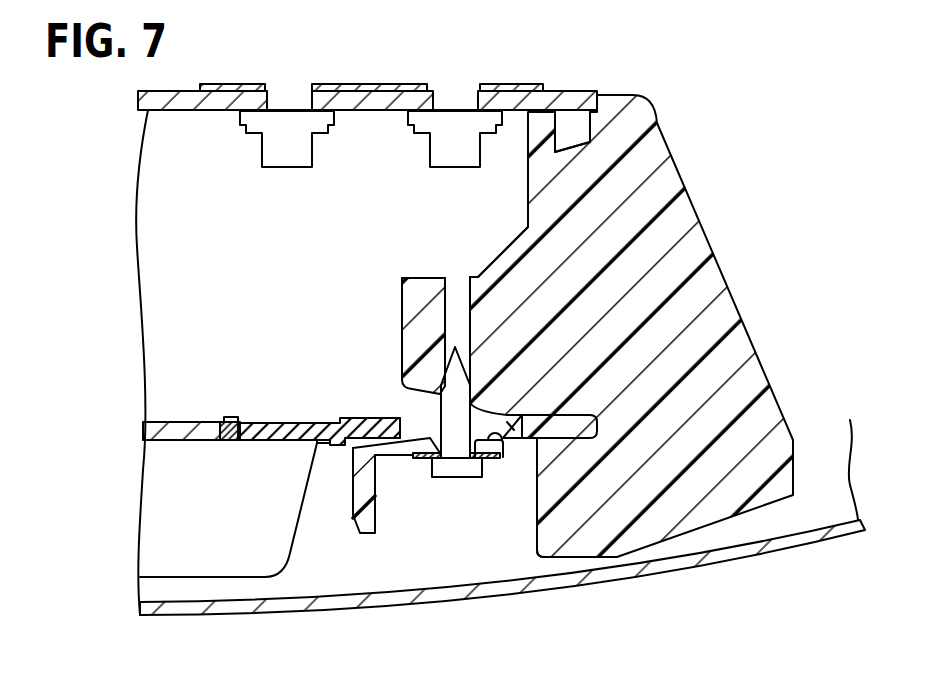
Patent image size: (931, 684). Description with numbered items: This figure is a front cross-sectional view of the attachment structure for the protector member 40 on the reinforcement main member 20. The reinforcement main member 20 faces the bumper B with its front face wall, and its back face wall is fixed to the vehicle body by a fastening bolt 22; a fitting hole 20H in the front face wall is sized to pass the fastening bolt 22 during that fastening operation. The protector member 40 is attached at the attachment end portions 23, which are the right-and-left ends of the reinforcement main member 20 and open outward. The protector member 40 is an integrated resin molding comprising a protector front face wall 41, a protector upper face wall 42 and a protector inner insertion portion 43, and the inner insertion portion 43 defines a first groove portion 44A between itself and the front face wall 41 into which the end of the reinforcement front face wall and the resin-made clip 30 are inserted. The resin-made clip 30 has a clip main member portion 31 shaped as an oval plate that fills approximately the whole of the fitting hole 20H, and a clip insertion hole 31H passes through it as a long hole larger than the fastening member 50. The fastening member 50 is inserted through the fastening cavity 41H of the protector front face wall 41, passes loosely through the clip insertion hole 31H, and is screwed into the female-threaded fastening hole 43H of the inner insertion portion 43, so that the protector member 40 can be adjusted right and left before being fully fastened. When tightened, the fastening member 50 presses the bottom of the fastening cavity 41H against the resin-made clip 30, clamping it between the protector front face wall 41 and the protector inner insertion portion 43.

The reinforcement main member 20 is at (181, 443).
The fitting hole 20H is at (228, 420).
The fastening bolt 22 is at (272, 167).
The attachment end portion 23 is at (572, 106).
The resin-made clip 30 is at (313, 420).
The clip main member portion 31 is at (270, 420).
The clip insertion hole 31H is at (402, 418).
The protector member 40 is at (650, 317).
The protector front face wall 41 is at (485, 513).
The fastening cavity 41H is at (380, 515).
The protector upper face wall 42 is at (712, 270).
The protector inner insertion portion 43 is at (402, 298).
The fastening hole 43H is at (455, 297).
The first groove portion 44A is at (503, 460).
The fastening member 50 is at (446, 480).
The bumper B is at (600, 593).